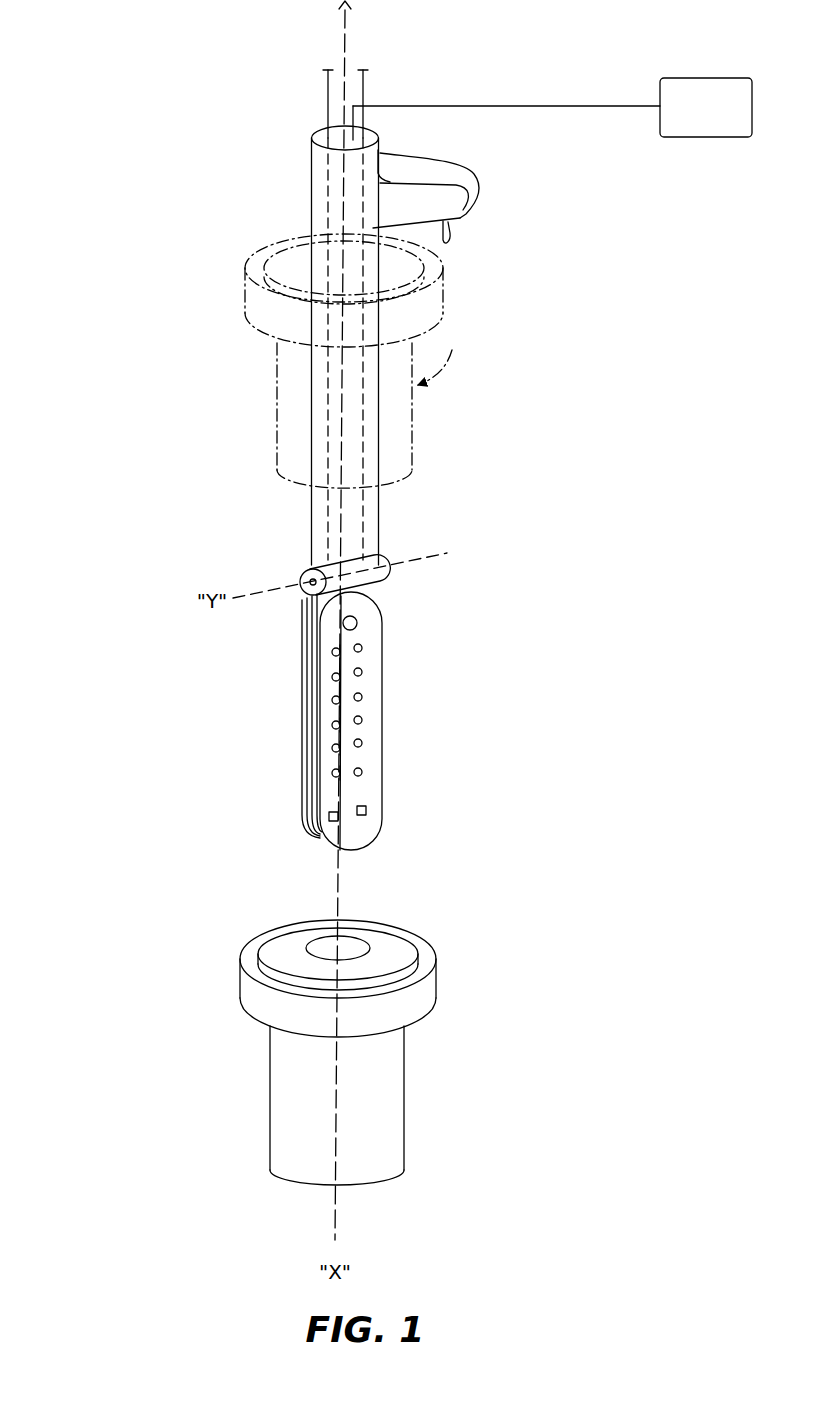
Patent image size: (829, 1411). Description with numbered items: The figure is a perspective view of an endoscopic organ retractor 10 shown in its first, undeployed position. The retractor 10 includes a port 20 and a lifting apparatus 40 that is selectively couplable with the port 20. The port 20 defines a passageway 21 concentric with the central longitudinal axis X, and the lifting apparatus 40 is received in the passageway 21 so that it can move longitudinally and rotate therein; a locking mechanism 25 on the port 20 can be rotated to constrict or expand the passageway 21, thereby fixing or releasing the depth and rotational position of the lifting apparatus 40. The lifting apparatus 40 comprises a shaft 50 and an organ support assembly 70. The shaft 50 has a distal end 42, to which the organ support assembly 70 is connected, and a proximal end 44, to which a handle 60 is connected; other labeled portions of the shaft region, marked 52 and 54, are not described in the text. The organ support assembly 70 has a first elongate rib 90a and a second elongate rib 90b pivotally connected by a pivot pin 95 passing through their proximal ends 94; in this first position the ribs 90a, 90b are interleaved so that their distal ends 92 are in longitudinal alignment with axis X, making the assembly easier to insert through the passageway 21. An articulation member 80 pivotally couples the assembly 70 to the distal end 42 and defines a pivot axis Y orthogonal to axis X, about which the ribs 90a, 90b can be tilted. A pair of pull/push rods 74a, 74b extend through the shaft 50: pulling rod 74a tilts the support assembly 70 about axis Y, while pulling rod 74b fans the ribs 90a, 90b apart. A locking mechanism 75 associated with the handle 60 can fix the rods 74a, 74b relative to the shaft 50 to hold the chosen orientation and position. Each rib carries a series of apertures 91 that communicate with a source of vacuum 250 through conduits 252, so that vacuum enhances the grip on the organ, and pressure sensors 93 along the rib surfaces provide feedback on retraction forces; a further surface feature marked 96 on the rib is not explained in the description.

The endoscopic organ retractor 10 is at (195, 56).
The port 20 is at (381, 709).
The passageway 21 is at (354, 946).
The locking mechanism 25 is at (430, 985).
The lifting apparatus 40 is at (650, 517).
The distal end 42 is at (303, 551).
The proximal end 44 is at (385, 272).
The shaft 50 is at (404, 512).
The shaft end 52 is at (380, 545).
The shaft upper portion 54 is at (312, 262).
The handle 60 is at (280, 188).
The organ support assembly 70 is at (356, 738).
The pull/push rod 74a is at (326, 86).
The pull/push rod 74b is at (366, 86).
The locking mechanism 75 is at (452, 224).
The articulation member 80 is at (393, 570).
The first elongate rib 90a is at (383, 717).
The second elongate rib 90b is at (300, 719).
The apertures 91 is at (362, 772).
The distal ends 92 is at (365, 832).
The pressure sensor 93 is at (366, 811).
The proximal ends 94 is at (372, 622).
The pivot pin 95 is at (343, 623).
The aperture row 96 is at (372, 752).
The source of vacuum 250 is at (688, 122).
The conduits 252 is at (575, 100).